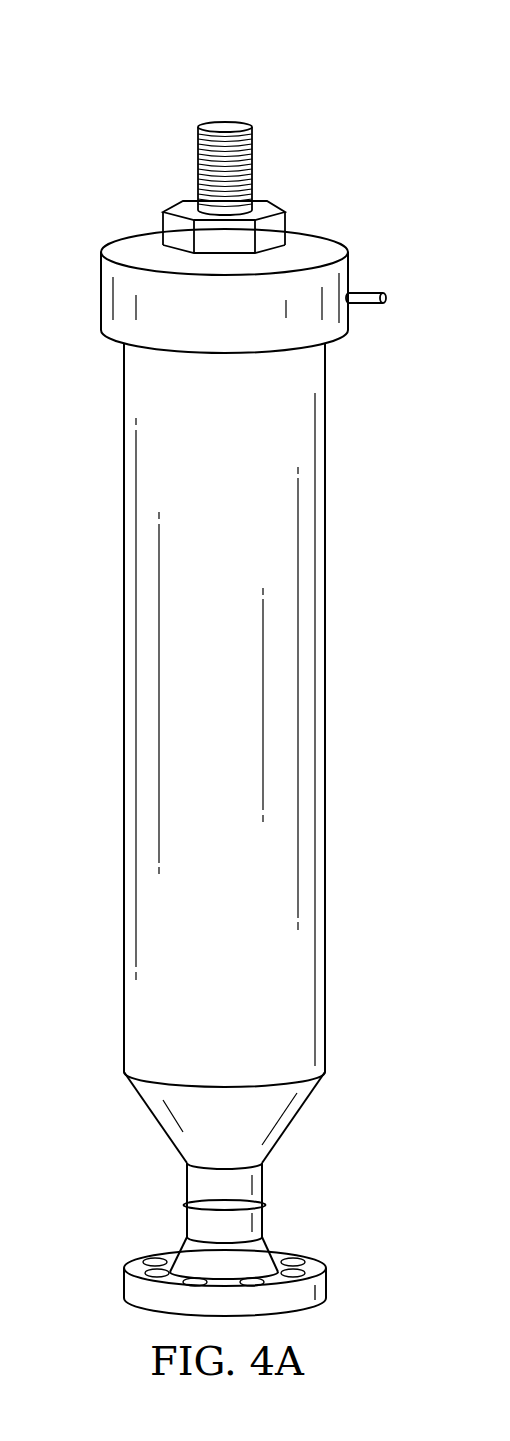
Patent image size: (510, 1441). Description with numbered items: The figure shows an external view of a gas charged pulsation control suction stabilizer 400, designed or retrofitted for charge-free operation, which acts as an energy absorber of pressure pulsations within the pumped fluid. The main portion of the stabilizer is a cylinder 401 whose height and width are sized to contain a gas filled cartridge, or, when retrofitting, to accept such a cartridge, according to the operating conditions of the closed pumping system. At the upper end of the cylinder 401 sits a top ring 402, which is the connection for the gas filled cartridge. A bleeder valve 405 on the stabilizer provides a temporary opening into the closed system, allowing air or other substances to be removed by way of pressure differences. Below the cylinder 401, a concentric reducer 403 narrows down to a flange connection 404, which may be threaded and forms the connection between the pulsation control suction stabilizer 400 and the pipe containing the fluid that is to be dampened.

The pulsation control suction stabilizer 400 is at (127, 68).
The cylinder 401 is at (123, 473).
The top ring 402 is at (101, 291).
The concentric reducer 403 is at (153, 1118).
The flange connection 404 is at (124, 1278).
The bleeder valve 405 is at (362, 292).